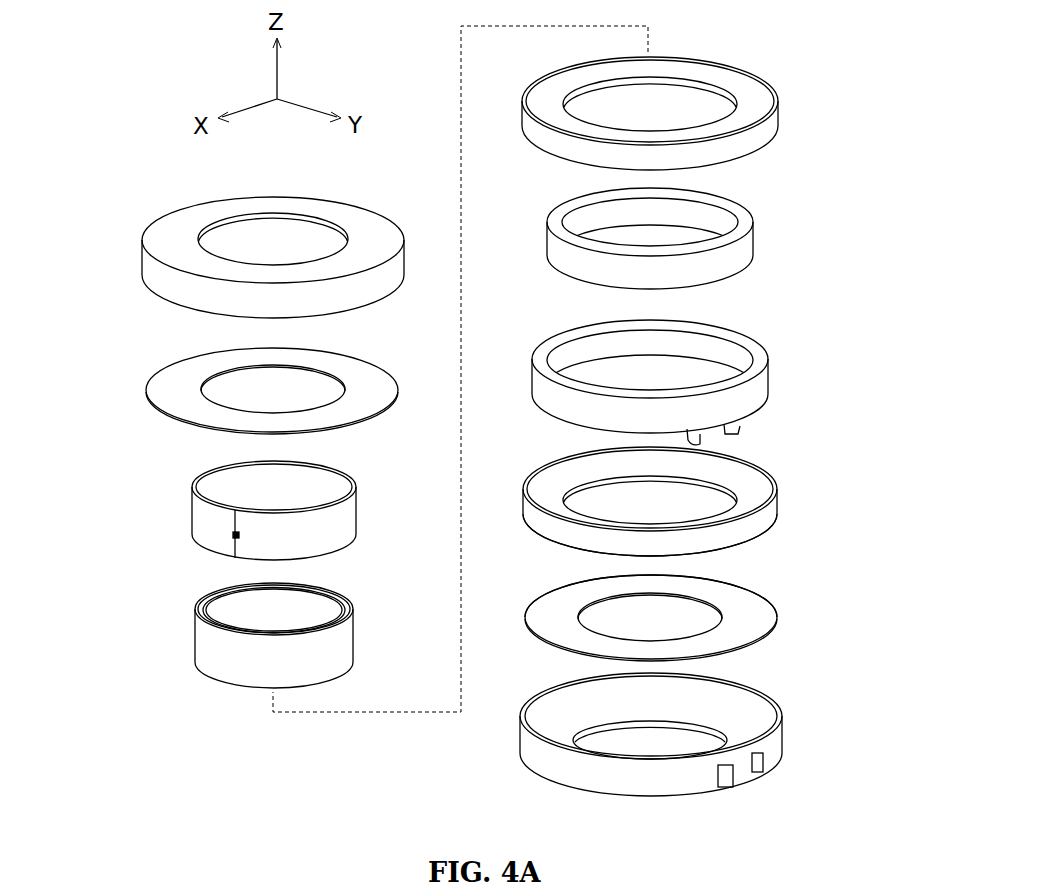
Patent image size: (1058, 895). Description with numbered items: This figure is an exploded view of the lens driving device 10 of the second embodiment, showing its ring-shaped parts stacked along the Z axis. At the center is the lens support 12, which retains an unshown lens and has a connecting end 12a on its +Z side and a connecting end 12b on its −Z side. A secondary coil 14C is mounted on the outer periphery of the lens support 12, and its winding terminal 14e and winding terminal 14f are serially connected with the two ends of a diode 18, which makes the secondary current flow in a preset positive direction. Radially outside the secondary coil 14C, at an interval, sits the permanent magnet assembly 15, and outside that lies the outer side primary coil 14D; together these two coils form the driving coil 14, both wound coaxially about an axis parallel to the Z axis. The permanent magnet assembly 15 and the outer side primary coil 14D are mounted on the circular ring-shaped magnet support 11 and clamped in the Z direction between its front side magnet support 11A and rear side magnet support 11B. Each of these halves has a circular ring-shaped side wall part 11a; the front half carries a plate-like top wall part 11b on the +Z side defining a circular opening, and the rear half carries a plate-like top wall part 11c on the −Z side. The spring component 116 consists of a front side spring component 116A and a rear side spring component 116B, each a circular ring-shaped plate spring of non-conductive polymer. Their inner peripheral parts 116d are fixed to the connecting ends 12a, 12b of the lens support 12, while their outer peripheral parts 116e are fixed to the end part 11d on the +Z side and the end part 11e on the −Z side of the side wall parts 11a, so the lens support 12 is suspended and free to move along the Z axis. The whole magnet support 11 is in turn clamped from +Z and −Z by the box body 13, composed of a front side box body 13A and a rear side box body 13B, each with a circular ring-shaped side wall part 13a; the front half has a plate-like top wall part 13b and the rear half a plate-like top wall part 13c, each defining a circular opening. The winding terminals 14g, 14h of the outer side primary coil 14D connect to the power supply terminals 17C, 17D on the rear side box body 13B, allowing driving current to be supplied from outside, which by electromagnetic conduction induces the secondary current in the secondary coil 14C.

The lens driving device 10 is at (98, 84).
The magnet support 11 is at (678, 300).
The front side magnet support 11A is at (745, 88).
The rear side magnet support 11B is at (765, 508).
The side wall part 11a is at (757, 136).
The plate-like top wall part 11b is at (757, 100).
The plate-like top wall part 11c is at (735, 487).
The end part 11d is at (698, 58).
The end part 11e is at (553, 540).
The lens support 12 is at (207, 645).
The connecting end 12a is at (200, 607).
The connecting end 12b is at (200, 670).
The box body 13 is at (465, 498).
The front side box body 13A is at (180, 222).
The rear side box body 13B is at (775, 740).
The side wall part 13a is at (156, 280).
The plate-like top wall part 13b is at (237, 208).
The plate-like top wall part 13c is at (567, 723).
The driving coil 14 is at (472, 427).
The secondary coil 14C is at (206, 520).
The outer side primary coil 14D is at (757, 383).
The winding terminal 14e is at (235, 507).
The winding terminal 14f is at (238, 548).
The winding terminal 14g is at (690, 432).
The winding terminal 14h is at (738, 433).
The permanent magnet assembly 15 is at (745, 250).
The power supply terminal 17C is at (725, 787).
The power supply terminal 17D is at (765, 766).
The diode 18 is at (230, 536).
The spring component 116 is at (467, 501).
The front side spring component 116A is at (180, 371).
The rear side spring component 116B is at (748, 606).
The inner peripheral part 116d is at (330, 372).
The outer peripheral part 116e is at (152, 410).